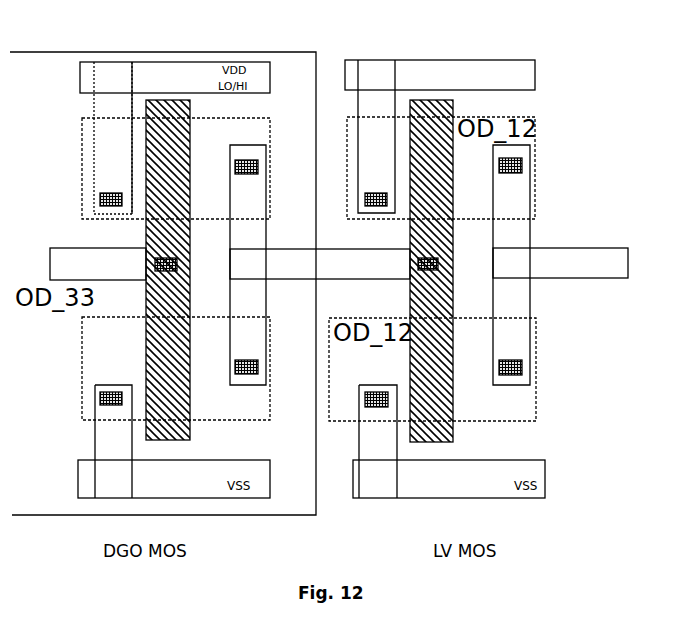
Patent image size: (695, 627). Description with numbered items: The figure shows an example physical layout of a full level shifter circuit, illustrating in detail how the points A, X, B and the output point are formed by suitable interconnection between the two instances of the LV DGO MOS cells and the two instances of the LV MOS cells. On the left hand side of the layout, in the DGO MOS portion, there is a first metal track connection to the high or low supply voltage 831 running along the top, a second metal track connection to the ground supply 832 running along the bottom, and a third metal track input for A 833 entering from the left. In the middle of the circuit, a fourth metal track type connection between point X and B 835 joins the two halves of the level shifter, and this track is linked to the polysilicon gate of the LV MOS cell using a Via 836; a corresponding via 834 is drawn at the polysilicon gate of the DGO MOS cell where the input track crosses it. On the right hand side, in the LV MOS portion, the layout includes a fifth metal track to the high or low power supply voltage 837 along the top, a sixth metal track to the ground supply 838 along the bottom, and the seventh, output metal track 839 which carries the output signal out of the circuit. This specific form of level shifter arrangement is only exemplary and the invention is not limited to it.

The first metal track connection to VDDHI/VDDLO 831 is at (93, 116).
The second metal track connection to VSS 832 is at (95, 460).
The third metal track input for A 833 is at (74, 248).
The DGO MOS gate contact 834 is at (178, 258).
The fourth metal track type connection between point X and B 835 is at (340, 248).
The Via 836 is at (442, 258).
The fifth metal track to power supply voltage VDDHI/VDDLO 837 is at (412, 62).
The sixth metal track to VSS 838 is at (358, 460).
The output metal track 839 is at (562, 248).